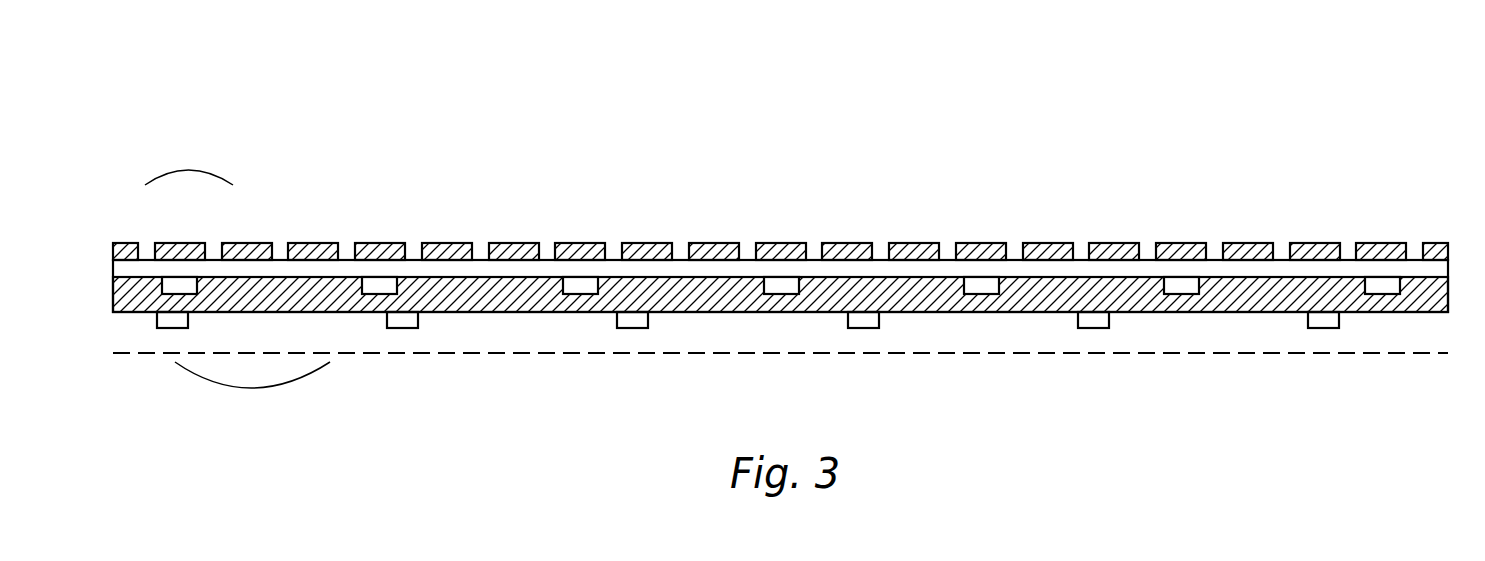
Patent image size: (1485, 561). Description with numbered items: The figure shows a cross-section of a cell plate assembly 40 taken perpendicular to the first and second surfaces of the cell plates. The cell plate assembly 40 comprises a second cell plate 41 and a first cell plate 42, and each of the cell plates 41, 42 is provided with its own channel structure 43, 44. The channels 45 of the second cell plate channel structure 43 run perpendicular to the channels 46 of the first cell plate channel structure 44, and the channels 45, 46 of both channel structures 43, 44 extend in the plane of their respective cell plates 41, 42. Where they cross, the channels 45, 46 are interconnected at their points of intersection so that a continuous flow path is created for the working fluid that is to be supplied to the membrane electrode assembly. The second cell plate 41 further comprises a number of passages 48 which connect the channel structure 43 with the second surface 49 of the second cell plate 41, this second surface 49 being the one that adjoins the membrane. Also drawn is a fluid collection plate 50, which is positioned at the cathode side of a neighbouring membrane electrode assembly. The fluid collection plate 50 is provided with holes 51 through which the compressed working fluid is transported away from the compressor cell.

The cell plate assembly 40 is at (142, 122).
The second cell plate 41 is at (517, 252).
The first cell plate 42 is at (505, 295).
The channel structure 43 is at (187, 170).
The channel structure 44 is at (250, 388).
The channels 45 is at (283, 268).
The channels 46 is at (580, 287).
The passages 48 is at (347, 254).
The second surface 49 is at (1320, 240).
The fluid collection plate 50 is at (995, 332).
The holes 51 is at (402, 323).